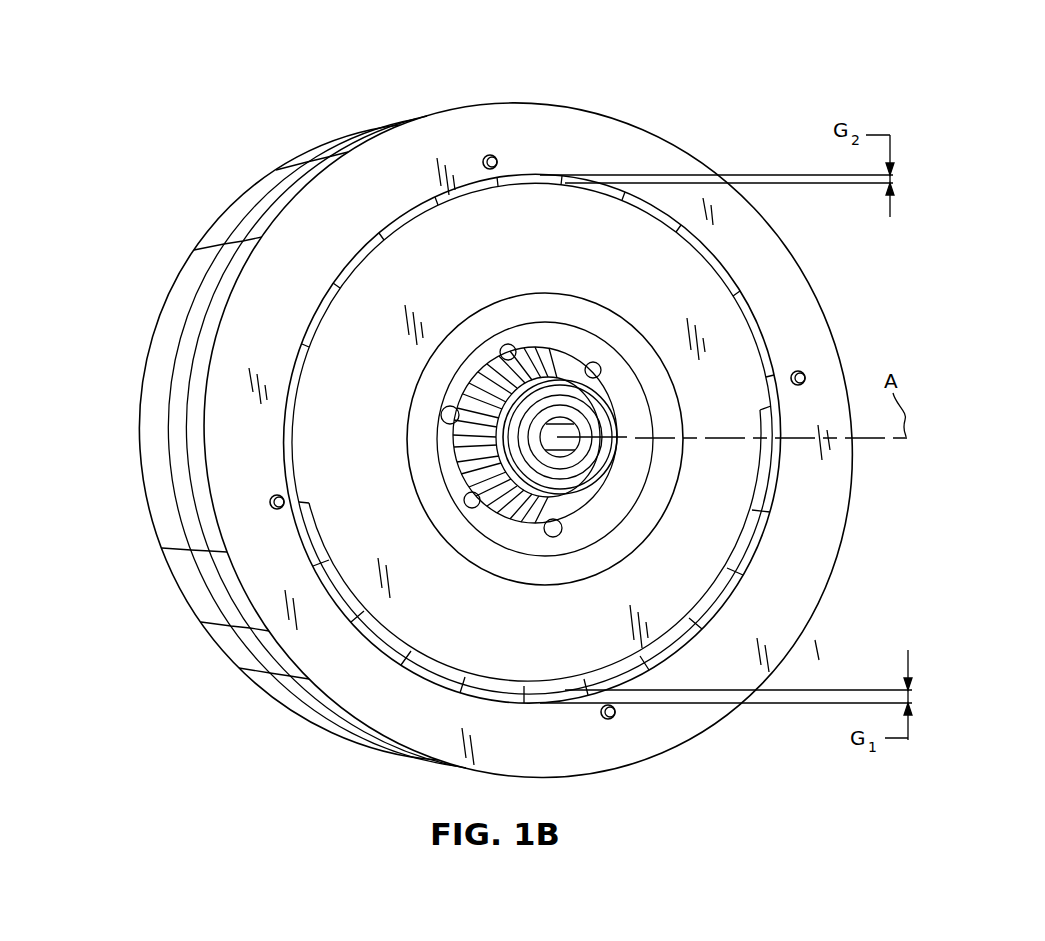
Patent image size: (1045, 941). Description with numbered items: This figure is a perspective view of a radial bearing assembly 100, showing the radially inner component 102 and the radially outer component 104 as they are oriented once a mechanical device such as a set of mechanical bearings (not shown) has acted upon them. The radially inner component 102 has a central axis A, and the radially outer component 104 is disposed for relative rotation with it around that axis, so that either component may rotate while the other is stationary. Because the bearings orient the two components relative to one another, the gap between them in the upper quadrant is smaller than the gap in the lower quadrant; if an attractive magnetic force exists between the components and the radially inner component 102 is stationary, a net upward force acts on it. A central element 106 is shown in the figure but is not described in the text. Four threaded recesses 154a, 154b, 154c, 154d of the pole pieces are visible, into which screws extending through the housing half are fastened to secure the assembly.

The radial bearing assembly 100 is at (642, 66).
The radially inner component 102 is at (688, 291).
The radially outer component 104 is at (232, 209).
The rotor 106 is at (498, 382).
The threaded recess 154a is at (497, 157).
The threaded recess 154b is at (805, 378).
The threaded recess 154c is at (615, 716).
The threaded recess 154d is at (270, 502).